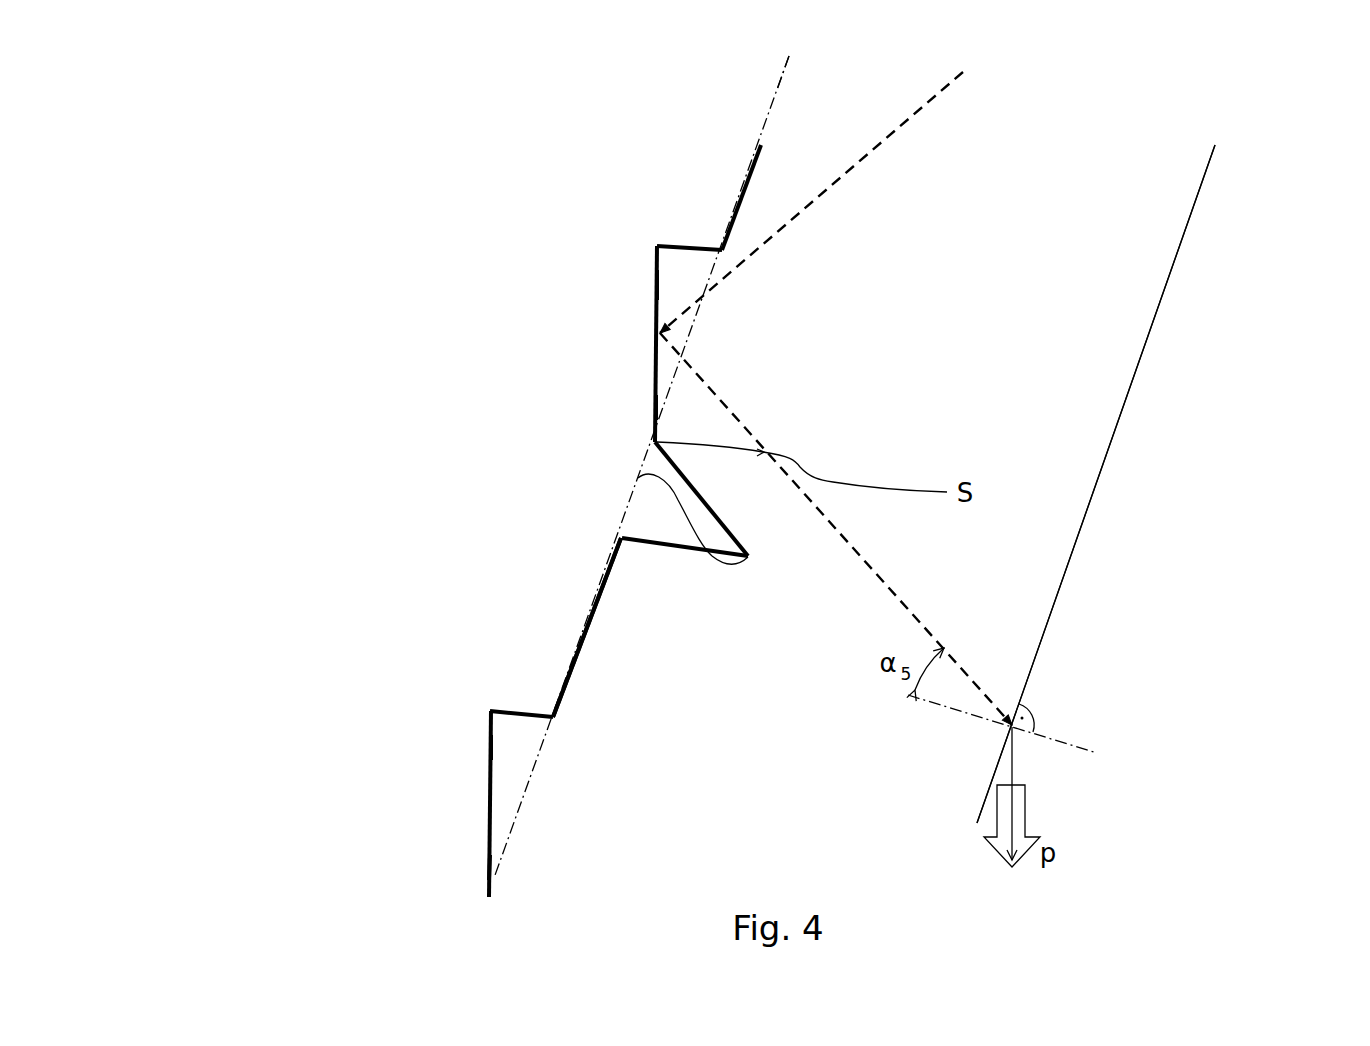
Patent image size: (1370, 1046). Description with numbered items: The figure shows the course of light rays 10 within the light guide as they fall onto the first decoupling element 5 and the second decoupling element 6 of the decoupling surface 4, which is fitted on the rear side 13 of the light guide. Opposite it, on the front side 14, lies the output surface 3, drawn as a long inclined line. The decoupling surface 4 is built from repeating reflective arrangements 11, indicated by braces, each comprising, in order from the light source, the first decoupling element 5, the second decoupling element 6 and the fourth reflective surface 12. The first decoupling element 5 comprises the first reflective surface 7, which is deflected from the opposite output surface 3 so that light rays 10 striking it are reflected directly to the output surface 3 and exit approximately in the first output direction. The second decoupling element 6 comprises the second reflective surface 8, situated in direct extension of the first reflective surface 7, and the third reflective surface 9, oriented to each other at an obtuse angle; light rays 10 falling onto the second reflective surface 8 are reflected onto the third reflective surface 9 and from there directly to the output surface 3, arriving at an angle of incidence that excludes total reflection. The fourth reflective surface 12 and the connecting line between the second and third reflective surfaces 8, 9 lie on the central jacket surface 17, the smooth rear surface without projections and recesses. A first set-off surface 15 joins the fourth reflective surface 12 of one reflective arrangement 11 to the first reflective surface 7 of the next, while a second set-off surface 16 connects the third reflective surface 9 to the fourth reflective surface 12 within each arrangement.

The output surface 3 is at (1117, 423).
The decoupling surface 4 is at (757, 163).
The first decoupling element 5 is at (654, 249).
The second decoupling element 6 is at (663, 455).
The first reflective surface 7 is at (655, 290).
The second reflective surface 8 is at (655, 408).
The third reflective surface 9 is at (652, 458).
The light rays 10 is at (966, 73).
The reflective arrangement 11 is at (297, 618).
The fourth reflective surface 12 is at (743, 196).
The rear side 13 is at (597, 567).
The front side 14 is at (1188, 277).
The first set-off surface 15 is at (688, 246).
The second set-off surface 16 is at (647, 538).
The central jacket surface 17 is at (785, 73).